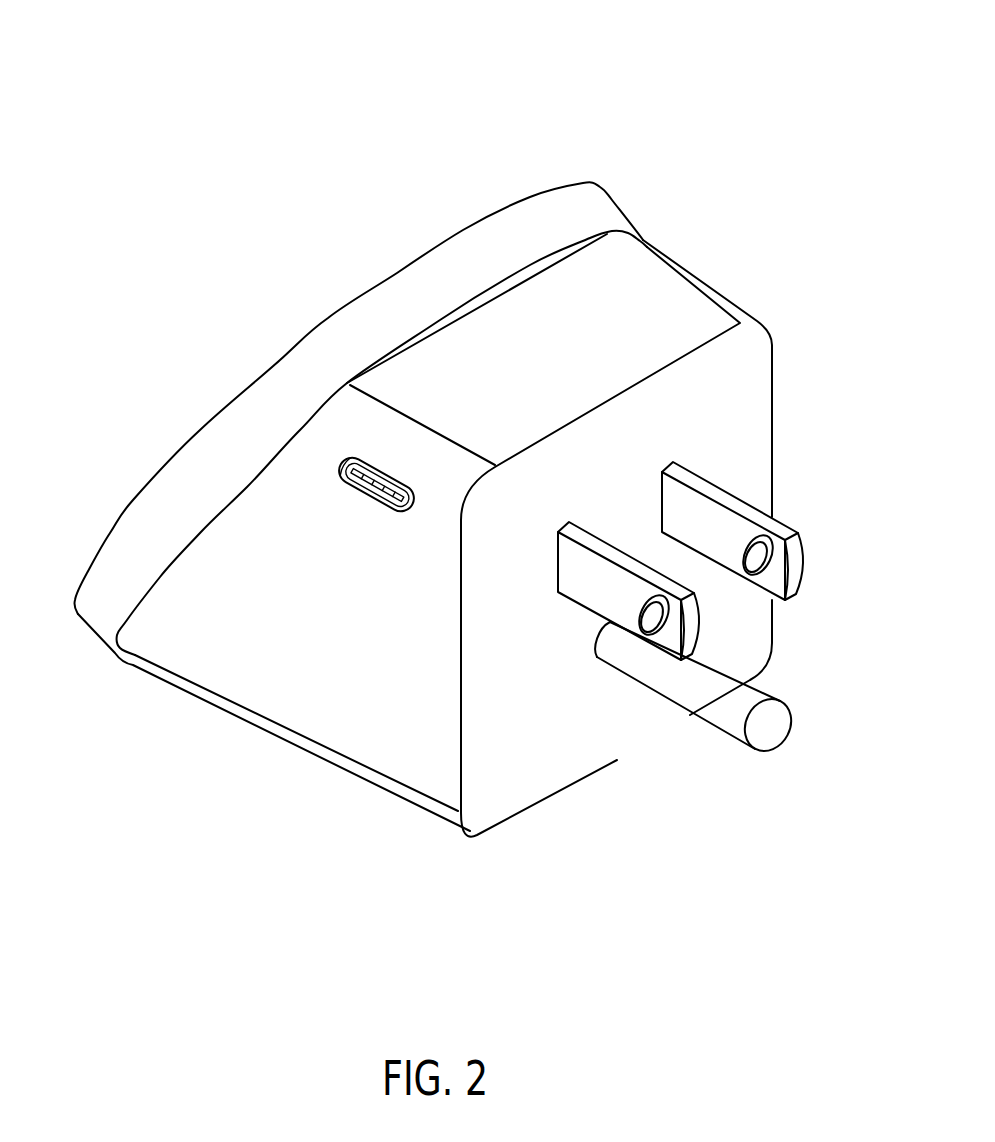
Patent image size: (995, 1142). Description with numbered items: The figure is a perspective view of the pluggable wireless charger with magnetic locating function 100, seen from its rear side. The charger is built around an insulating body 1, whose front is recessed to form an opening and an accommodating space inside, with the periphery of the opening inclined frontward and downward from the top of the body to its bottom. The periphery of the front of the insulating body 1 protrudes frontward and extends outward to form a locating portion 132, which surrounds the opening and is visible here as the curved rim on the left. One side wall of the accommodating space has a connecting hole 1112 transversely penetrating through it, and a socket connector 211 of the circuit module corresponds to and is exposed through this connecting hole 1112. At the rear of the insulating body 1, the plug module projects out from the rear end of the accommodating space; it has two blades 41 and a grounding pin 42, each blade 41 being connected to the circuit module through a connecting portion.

The wireless charger with magnetic locating function 100 is at (73, 30).
The insulating body 1 is at (263, 685).
The locating portion 132 is at (112, 587).
The socket connector 211 is at (347, 460).
The connecting hole 1112 is at (365, 488).
The blades 41 is at (799, 553).
The grounding pin 42 is at (783, 730).